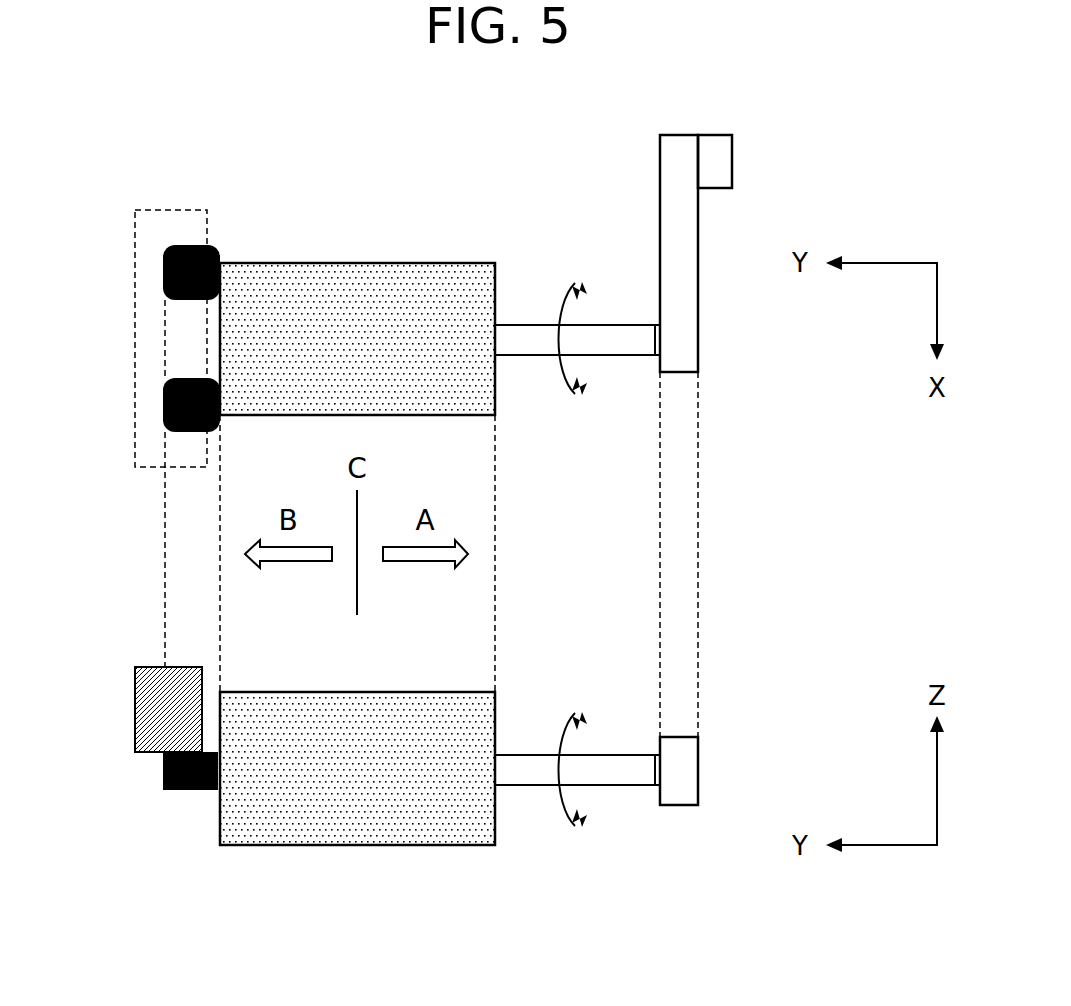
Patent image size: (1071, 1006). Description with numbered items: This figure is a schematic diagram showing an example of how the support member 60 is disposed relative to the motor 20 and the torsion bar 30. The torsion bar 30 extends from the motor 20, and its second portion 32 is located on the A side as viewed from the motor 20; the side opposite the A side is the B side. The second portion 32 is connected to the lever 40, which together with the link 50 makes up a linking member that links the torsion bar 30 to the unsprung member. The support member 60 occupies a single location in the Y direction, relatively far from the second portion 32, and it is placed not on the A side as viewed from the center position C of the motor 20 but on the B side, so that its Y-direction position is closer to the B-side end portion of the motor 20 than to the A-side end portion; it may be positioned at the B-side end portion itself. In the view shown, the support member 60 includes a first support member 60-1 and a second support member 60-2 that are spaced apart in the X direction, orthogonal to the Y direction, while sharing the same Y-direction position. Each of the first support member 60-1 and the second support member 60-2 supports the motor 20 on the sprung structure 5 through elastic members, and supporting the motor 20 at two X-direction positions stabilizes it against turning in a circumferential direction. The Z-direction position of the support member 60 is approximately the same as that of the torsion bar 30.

The sprung structure 5 is at (135, 343).
The motor 20 is at (358, 262).
The torsion bar 30 is at (537, 325).
The second portion 32 is at (658, 325).
The lever 40 is at (698, 340).
The link 50 is at (732, 160).
The support member 60 is at (183, 793).
The first support member 60-1 is at (163, 270).
The second support member 60-2 is at (163, 400).